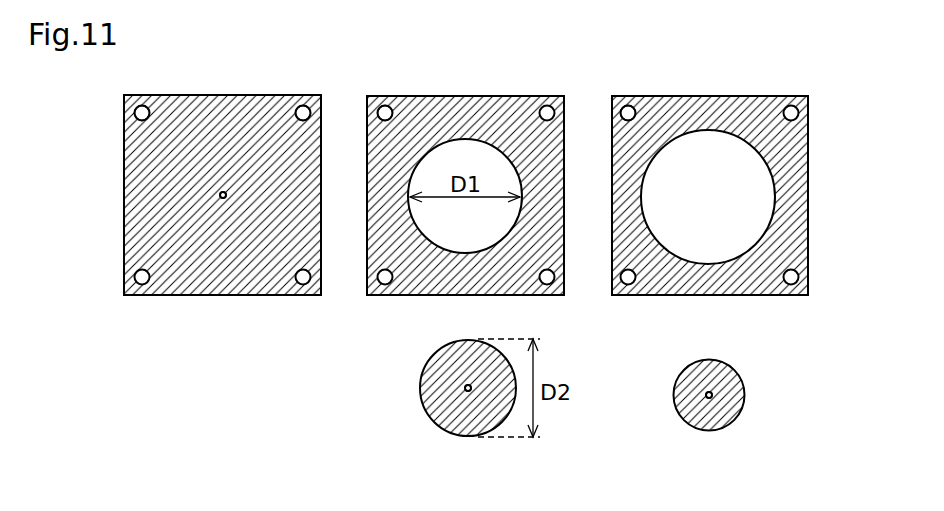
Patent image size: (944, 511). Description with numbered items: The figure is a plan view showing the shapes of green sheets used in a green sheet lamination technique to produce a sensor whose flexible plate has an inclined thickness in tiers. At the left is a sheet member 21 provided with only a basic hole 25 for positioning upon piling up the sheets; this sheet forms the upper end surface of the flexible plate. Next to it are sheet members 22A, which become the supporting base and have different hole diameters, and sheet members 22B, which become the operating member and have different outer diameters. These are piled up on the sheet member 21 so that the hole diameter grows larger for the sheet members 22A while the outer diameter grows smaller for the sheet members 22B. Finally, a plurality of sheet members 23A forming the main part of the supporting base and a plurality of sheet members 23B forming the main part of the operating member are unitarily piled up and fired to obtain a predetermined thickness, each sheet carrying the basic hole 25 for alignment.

The sheet member 21 is at (248, 283).
The sheet member 22A is at (461, 280).
The sheet member 22B is at (457, 353).
The sheet member 23A is at (708, 283).
The sheet member 23B is at (710, 375).
The basic hole 25 is at (223, 192).